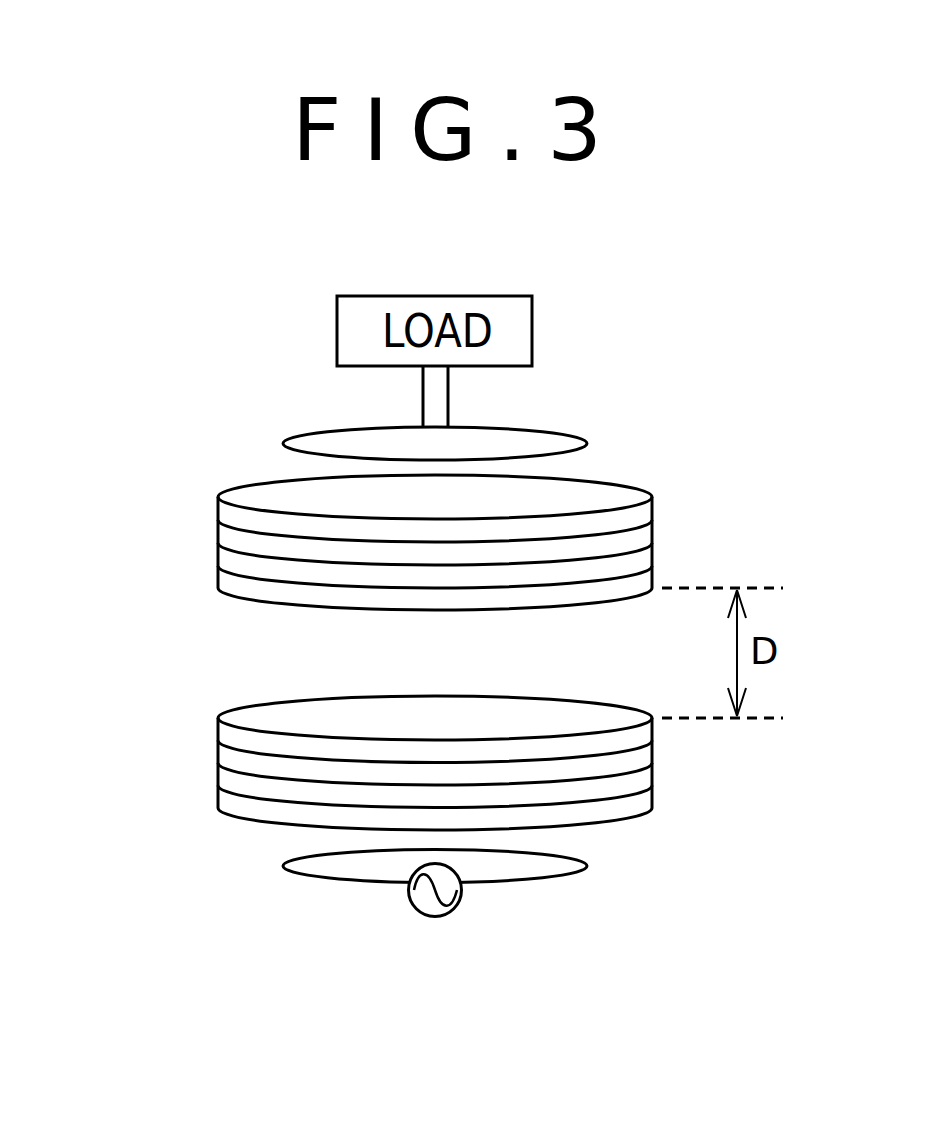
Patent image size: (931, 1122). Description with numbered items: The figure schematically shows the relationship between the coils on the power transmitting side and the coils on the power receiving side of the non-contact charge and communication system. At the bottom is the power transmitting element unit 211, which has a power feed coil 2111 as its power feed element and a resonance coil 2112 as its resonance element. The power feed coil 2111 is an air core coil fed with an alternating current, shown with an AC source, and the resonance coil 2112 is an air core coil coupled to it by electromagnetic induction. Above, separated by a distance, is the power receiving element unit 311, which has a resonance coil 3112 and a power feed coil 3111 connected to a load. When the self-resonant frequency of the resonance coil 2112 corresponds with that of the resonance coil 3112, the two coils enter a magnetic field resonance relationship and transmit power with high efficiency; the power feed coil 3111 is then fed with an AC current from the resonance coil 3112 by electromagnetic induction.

The power receiving element unit 311 is at (430, 482).
The power feed coil 3111 is at (283, 443).
The resonance coil 3112 is at (218, 578).
The power transmitting element unit 211 is at (430, 825).
The power feed coil 2111 is at (283, 866).
The resonance coil 2112 is at (218, 797).